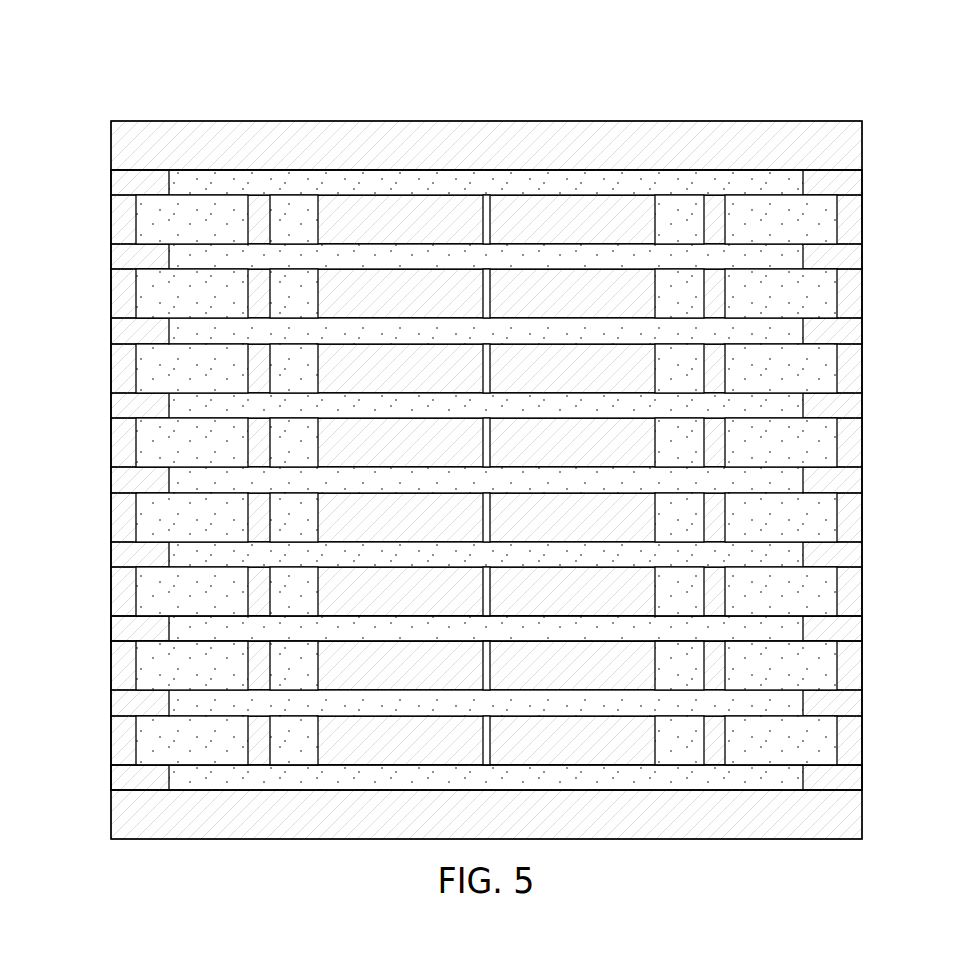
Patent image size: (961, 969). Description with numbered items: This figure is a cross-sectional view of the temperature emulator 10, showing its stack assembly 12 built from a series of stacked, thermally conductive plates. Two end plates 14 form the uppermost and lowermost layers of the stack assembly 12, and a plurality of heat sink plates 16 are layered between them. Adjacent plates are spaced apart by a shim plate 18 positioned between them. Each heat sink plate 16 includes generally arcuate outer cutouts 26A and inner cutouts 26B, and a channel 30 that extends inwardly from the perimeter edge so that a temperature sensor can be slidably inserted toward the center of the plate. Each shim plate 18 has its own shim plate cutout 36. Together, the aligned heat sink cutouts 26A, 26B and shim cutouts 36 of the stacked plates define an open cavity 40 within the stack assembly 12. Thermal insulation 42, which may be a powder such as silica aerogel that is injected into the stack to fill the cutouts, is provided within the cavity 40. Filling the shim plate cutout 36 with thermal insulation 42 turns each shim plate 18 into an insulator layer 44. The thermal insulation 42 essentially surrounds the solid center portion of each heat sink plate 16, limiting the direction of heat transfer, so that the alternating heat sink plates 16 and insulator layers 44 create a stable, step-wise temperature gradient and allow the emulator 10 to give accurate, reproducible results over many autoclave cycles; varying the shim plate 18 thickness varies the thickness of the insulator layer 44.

The emulator 10 is at (847, 103).
The stack assembly 12 is at (868, 439).
The end plate 14 is at (862, 143).
The heat sink plate 16 is at (111, 220).
The shim plate 18 is at (862, 182).
The outer cutout 26A is at (803, 750).
The inner cutout 26B is at (704, 750).
The channel 30 is at (490, 225).
The shim plate cutout 36 is at (424, 180).
The open cavity 40 is at (623, 168).
The thermal insulation 42 is at (716, 180).
The insulator layer 44 is at (110, 617).